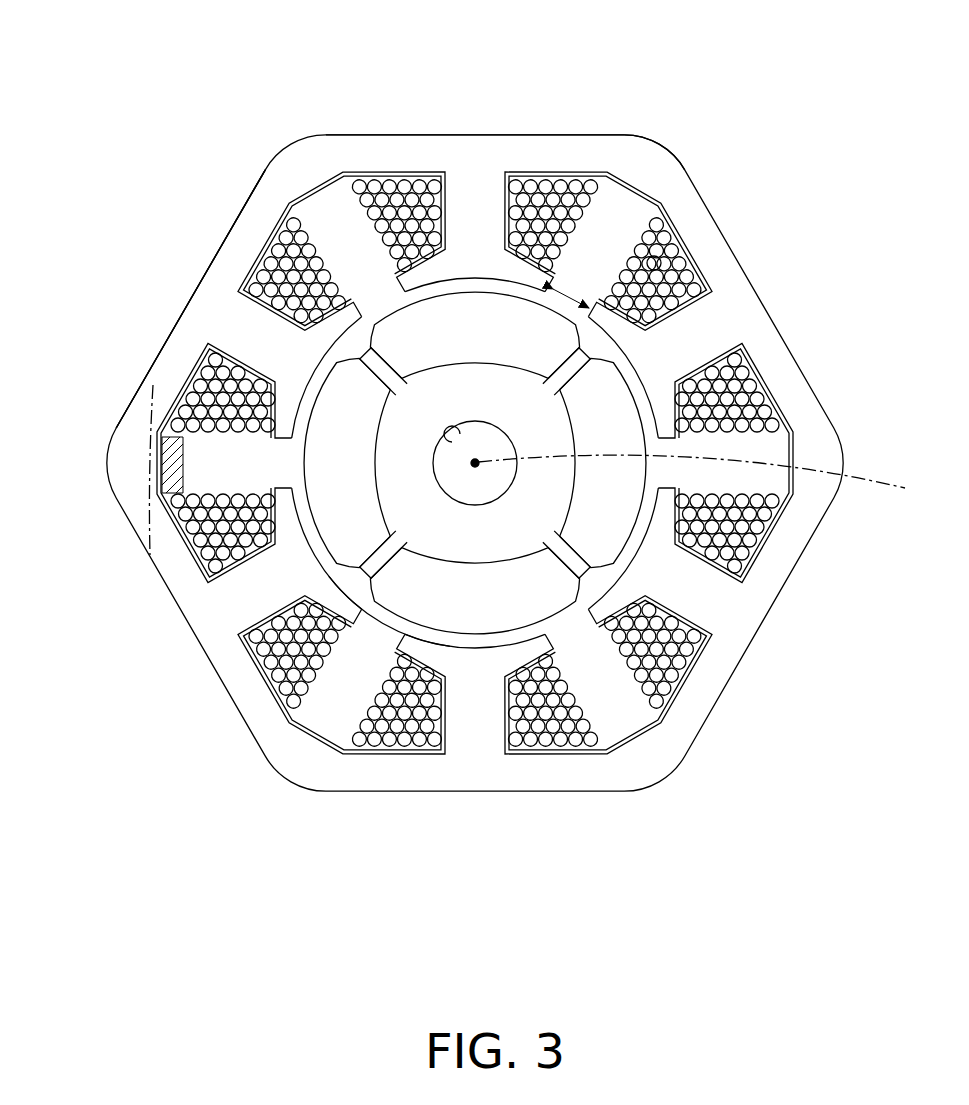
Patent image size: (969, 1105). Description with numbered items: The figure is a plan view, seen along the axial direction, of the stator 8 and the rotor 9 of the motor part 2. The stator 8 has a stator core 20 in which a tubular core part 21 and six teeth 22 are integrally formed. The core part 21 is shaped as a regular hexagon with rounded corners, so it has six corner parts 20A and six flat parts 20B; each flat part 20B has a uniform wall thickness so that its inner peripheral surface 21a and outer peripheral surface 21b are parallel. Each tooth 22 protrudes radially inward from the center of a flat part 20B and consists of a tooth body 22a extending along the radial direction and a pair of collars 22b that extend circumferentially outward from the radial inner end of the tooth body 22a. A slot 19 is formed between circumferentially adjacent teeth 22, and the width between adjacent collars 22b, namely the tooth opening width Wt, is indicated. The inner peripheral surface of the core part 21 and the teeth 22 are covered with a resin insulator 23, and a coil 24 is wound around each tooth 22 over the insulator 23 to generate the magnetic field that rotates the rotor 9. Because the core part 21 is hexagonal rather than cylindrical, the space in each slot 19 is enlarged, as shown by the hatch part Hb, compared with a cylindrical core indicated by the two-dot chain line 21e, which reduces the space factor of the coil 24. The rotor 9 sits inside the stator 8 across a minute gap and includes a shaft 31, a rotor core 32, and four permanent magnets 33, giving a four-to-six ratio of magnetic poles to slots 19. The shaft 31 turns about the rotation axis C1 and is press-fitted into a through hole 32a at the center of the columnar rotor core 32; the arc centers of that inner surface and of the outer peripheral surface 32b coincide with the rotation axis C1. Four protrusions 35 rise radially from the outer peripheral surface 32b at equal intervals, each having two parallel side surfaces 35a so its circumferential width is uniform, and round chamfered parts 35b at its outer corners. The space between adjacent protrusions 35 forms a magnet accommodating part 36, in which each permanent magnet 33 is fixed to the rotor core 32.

The motor part 2 is at (797, 84).
The stator 8 is at (192, 310).
The rotor 9 is at (518, 492).
The slot 19 is at (603, 243).
The stator core 20 is at (252, 184).
The corner part 20A is at (300, 130).
The flat part 20B is at (225, 232).
The core part 21 is at (650, 160).
The inner peripheral surface 21a is at (300, 693).
The outer peripheral surface 21b is at (232, 672).
The two-dot chain line 21e is at (150, 410).
The tooth 22 is at (674, 292).
The tooth body 22a is at (415, 650).
The collar 22b is at (378, 695).
The insulator 23 is at (497, 262).
The coil 24 is at (656, 262).
The shaft 31 is at (505, 471).
The rotor core 32 is at (474, 540).
The through hole 32a is at (452, 442).
The outer peripheral surface 32b is at (477, 352).
The permanent magnet 33 is at (622, 415).
The protrusion 35 is at (390, 370).
The side surface 35a is at (578, 560).
The round chamfered part 35b is at (563, 565).
The magnet accommodating part 36 is at (345, 538).
The tooth opening width Wt is at (575, 283).
The hatch part Hb is at (188, 466).
The rotation axis C1 is at (704, 481).